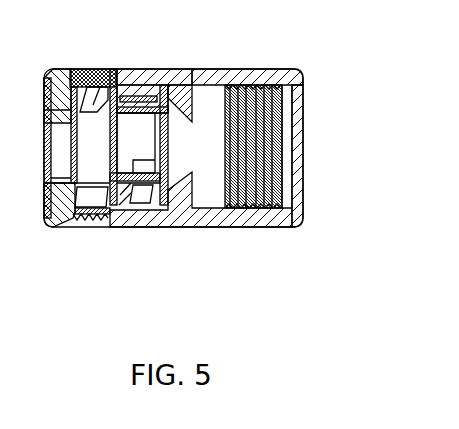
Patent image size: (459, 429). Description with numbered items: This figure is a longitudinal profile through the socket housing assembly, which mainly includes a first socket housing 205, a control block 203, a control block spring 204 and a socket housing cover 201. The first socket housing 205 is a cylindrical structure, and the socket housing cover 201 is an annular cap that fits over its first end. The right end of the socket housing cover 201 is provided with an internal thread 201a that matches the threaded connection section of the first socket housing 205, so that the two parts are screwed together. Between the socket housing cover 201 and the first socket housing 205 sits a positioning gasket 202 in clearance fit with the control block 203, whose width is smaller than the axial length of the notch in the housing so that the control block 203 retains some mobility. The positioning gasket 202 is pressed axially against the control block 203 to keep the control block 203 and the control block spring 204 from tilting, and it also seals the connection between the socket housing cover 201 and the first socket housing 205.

The socket housing cover 201 is at (61, 68).
The internal thread 201a is at (85, 226).
The positioning gasket 202 is at (103, 85).
The control block 203 is at (128, 92).
The control block spring 204 is at (133, 208).
The first socket housing 205 is at (222, 69).